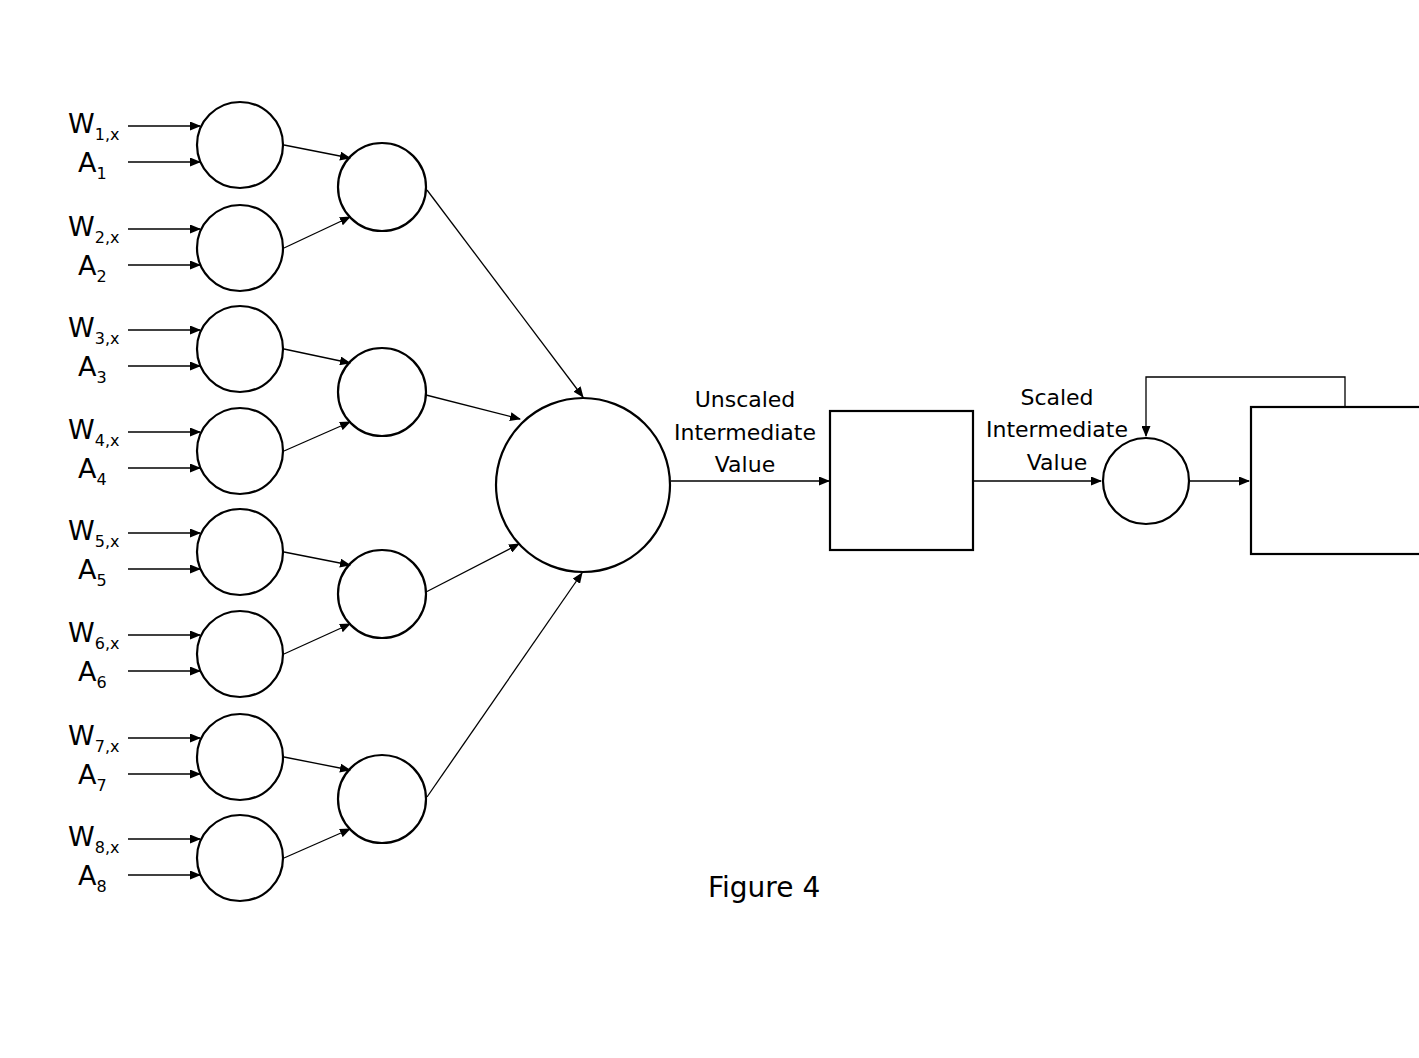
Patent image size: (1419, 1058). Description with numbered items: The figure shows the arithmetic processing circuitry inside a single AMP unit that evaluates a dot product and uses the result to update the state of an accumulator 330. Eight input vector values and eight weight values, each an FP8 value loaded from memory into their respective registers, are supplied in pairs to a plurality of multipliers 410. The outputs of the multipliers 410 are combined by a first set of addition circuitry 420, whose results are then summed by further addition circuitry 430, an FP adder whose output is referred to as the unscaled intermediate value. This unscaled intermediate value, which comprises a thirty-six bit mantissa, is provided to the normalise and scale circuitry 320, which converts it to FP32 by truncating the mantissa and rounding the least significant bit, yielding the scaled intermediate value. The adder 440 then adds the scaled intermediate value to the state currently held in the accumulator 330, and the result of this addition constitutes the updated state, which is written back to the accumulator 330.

The multipliers 410 is at (278, 120).
The first set of addition circuitry 420 is at (413, 153).
The further addition circuitry 430 is at (643, 545).
The normalise and scale circuitry 320 is at (905, 411).
The adder 440 is at (1146, 524).
The accumulator 330 is at (1345, 554).